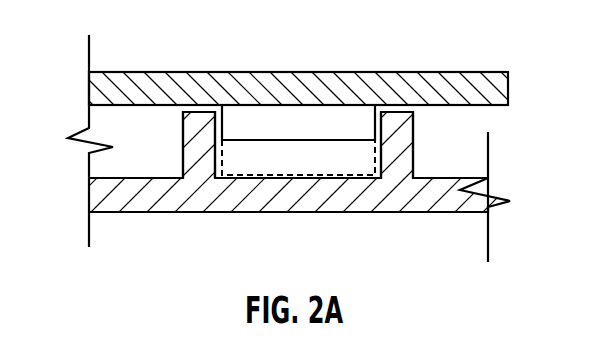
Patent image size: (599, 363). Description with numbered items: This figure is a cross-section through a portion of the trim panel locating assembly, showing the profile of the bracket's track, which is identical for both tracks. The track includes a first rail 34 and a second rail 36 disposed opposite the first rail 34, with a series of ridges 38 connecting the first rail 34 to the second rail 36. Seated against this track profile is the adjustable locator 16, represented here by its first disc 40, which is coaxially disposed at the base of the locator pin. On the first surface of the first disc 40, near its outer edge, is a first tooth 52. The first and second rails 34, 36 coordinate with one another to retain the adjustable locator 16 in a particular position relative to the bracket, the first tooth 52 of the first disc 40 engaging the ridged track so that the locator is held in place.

The adjustable locator 16 is at (377, 72).
The first disc 40 is at (122, 72).
The first rail 34 is at (193, 110).
The second rail 36 is at (397, 110).
The series of ridges 38 is at (308, 140).
The first tooth 52 is at (253, 176).